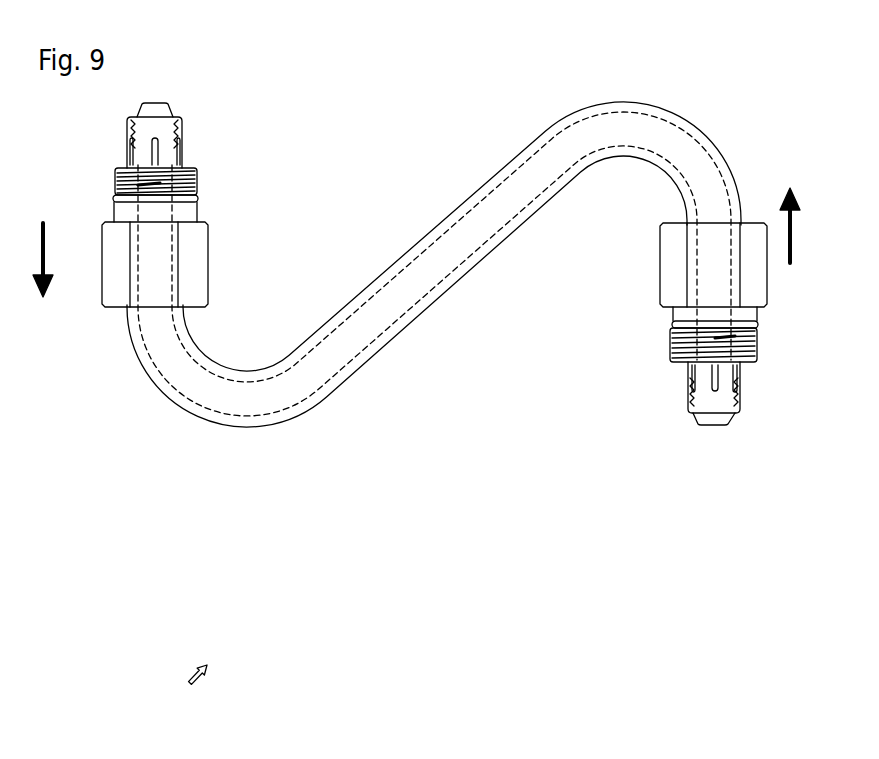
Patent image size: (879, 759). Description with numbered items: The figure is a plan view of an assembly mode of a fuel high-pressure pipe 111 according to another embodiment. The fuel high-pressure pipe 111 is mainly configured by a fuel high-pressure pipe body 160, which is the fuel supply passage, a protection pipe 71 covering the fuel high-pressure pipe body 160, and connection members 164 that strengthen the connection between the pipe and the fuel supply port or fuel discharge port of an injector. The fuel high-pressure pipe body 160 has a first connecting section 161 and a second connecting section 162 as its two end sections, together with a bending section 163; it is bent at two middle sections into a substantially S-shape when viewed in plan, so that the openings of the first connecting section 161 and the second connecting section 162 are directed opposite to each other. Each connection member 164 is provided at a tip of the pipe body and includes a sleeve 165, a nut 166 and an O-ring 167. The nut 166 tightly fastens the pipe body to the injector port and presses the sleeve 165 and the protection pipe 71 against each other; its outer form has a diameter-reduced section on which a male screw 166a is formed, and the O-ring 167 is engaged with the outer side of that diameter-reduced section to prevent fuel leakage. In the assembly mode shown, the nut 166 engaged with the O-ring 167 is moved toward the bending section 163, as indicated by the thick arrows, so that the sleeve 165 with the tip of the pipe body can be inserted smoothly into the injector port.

The protection pipe 71 is at (126, 345).
The fuel high-pressure pipe 111 is at (181, 686).
The fuel high-pressure pipe body 160 is at (139, 108).
The first connecting section 161 is at (130, 246).
The second connecting section 162 is at (740, 285).
The bending section 163 is at (433, 291).
The connection member 164 is at (270, 137).
The sleeve 165 is at (183, 133).
The nut 166 is at (200, 262).
The male screw 166a is at (115, 190).
The O-ring 167 is at (198, 200).